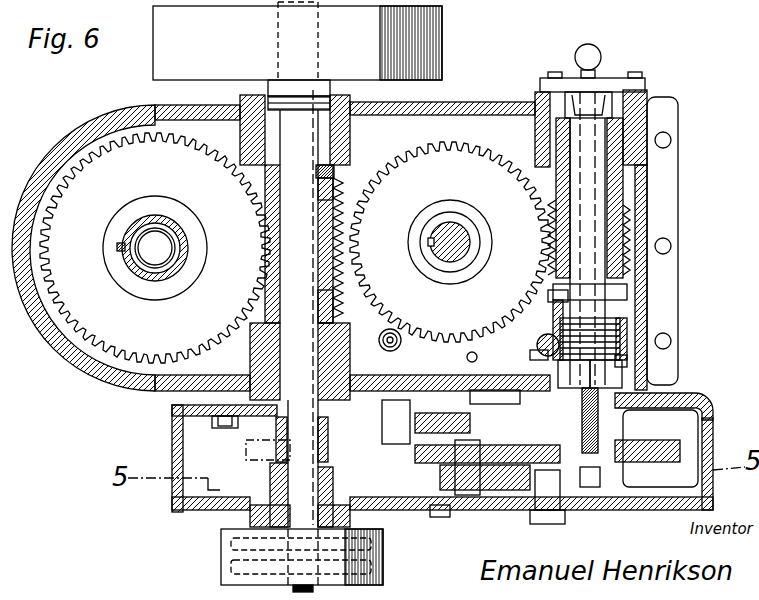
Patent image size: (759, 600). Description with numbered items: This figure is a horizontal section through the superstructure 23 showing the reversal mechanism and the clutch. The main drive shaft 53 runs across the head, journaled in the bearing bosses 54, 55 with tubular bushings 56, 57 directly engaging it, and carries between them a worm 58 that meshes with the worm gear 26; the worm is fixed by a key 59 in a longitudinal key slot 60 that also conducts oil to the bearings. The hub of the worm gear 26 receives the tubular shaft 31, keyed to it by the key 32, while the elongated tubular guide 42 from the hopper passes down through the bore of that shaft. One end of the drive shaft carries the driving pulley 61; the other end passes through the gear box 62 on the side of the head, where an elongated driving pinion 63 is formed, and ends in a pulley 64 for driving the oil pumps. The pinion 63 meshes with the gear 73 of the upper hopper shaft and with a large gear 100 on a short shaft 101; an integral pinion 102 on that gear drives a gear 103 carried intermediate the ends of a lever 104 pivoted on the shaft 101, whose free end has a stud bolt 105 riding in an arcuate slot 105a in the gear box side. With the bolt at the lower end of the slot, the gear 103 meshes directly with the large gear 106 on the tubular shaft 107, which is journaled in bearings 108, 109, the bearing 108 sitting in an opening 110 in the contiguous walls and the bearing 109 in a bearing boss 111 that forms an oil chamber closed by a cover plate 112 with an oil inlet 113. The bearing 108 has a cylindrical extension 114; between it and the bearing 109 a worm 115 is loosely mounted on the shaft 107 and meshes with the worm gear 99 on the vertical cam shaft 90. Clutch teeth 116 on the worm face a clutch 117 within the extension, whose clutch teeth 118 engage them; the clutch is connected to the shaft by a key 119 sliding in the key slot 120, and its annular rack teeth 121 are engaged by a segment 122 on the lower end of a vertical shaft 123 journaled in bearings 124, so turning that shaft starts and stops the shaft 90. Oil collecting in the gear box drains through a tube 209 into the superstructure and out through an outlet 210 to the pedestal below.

The superstructure 23 is at (458, 106).
The worm gear 26 is at (155, 248).
The tubular shaft 31 is at (178, 266).
The key 32 is at (120, 253).
The tubular guide 42 is at (183, 244).
The main drive shaft 53 is at (300, 303).
The bearing boss 54 is at (384, 336).
The bearing boss 55 is at (350, 142).
The tubular bushing 56 is at (333, 303).
The tubular bushing 57 is at (335, 186).
The worm 58 is at (333, 220).
The key 59 is at (333, 244).
The key slot 60 is at (318, 178).
The driving pulley 61 is at (297, 41).
The gear box 62 is at (172, 450).
The driving pinion 63 is at (276, 433).
The pulley 64 is at (228, 556).
The gear 73 is at (224, 453).
The vertical shaft 90 is at (472, 232).
The worm gear 99 is at (450, 242).
The large gear 100 is at (470, 428).
The short shaft 101 is at (396, 422).
The pinion 102 is at (380, 468).
The gear 103 is at (498, 451).
The lever 104 is at (436, 513).
The stud bolt 105 is at (535, 505).
The arcuate slot 105a is at (584, 500).
The large gear 106 is at (648, 445).
The tubular shaft 107 is at (600, 160).
The bearing 108 is at (660, 448).
The bearing 109 is at (620, 186).
The opening 110 is at (660, 397).
The bearing boss 111 is at (640, 136).
The cover plate 112 is at (620, 82).
The inlet 113 is at (583, 95).
The cylindrical extension 114 is at (625, 329).
The worm 115 is at (630, 238).
The clutch teeth 116 is at (625, 291).
The clutch 117 is at (548, 300).
The clutch teeth 118 is at (628, 312).
The key 119 is at (574, 374).
The key slot 120 is at (606, 374).
The annular rack teeth 121 is at (622, 346).
The segment 122 is at (537, 344).
The vertical shaft 123 is at (531, 357).
The bearings 124 is at (495, 395).
The tube 209 is at (460, 358).
The outlet 210 is at (390, 347).